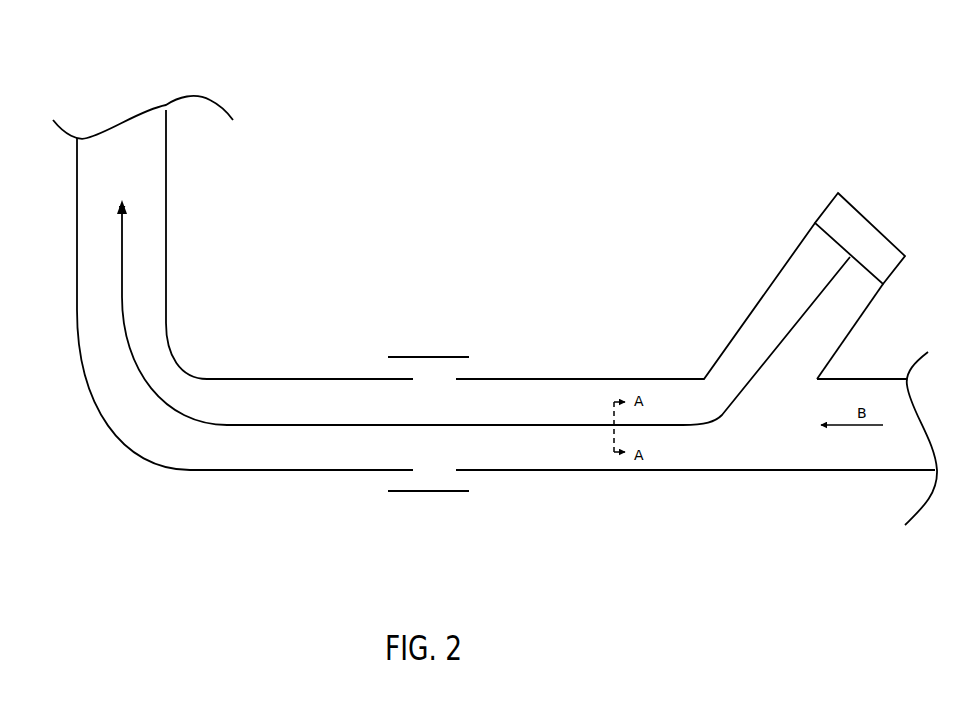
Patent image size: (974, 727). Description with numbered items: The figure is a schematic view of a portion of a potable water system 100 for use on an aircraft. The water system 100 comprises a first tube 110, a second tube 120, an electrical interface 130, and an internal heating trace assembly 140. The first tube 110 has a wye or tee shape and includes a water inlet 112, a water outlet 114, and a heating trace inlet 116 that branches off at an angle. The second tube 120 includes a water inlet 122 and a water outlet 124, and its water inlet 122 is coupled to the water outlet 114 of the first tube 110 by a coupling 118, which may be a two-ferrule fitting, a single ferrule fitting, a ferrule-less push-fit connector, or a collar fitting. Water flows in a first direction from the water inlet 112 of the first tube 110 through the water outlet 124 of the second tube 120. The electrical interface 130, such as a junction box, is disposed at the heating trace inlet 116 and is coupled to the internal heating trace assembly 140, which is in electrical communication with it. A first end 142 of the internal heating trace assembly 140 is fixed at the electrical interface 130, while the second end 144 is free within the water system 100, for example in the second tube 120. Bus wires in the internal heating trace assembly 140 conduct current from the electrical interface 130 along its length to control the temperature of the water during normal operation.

The water system 100 is at (431, 139).
The first tube 110 is at (590, 379).
The water inlet 112 is at (922, 471).
The water outlet 114 is at (457, 469).
The heating trace inlet 116 is at (838, 246).
The coupling 118 is at (434, 357).
The second tube 120 is at (166, 195).
The water inlet 122 is at (411, 379).
The water outlet 124 is at (166, 110).
The electrical interface 130 is at (850, 228).
The internal heating trace assembly 140 is at (277, 425).
The first end 142 is at (853, 255).
The second end 144 is at (127, 212).